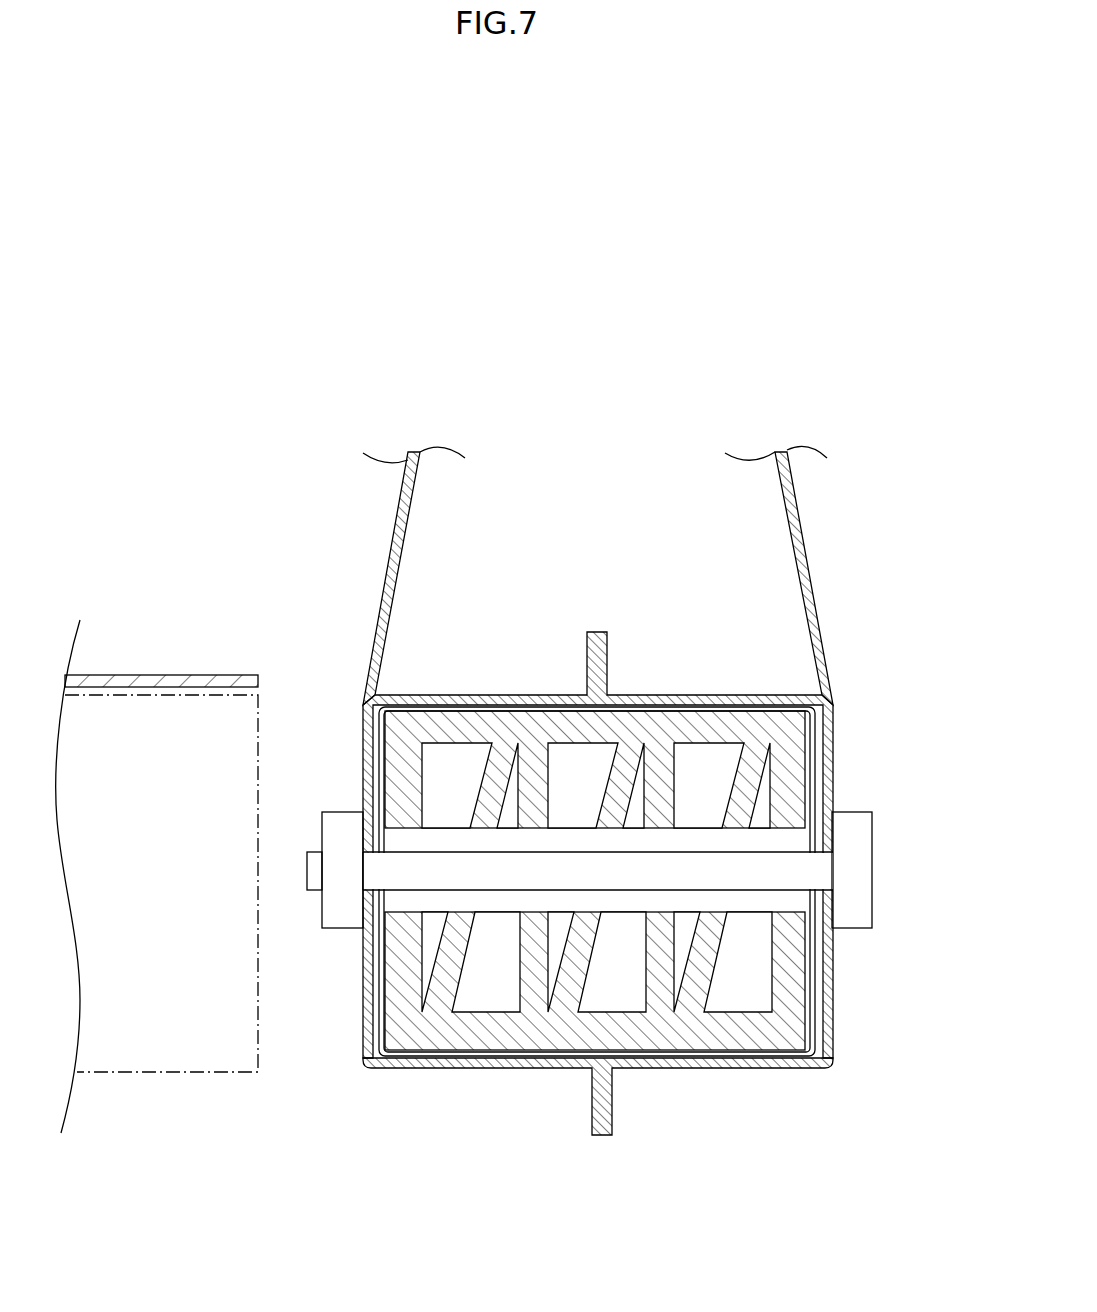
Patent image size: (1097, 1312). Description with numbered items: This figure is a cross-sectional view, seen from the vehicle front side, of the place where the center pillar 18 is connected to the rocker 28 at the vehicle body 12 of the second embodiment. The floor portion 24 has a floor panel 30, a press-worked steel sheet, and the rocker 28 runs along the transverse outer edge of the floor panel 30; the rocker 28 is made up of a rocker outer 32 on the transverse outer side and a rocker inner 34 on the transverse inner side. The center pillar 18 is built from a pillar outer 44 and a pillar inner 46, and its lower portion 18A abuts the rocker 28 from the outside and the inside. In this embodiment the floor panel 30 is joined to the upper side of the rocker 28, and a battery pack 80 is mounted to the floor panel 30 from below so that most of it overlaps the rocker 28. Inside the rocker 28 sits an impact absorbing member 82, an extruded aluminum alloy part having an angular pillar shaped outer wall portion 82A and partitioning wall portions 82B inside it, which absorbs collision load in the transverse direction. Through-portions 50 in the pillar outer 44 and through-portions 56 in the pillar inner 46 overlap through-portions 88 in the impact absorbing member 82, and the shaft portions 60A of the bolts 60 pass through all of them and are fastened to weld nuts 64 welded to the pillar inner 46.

The motor unit 12 is at (631, 727).
The lower portion 18A is at (635, 833).
The center pillar 18 is at (600, 833).
The floor portion 24 is at (157, 815).
The rocker 28 is at (598, 1139).
The floor panel 30 is at (178, 675).
The rocker outer 32 is at (752, 1060).
The rocker inner 34 is at (468, 1067).
The pillar outer 44 is at (800, 522).
The pillar inner 46 is at (386, 568).
The through-portions 50 is at (832, 862).
The through-portions 56 is at (364, 873).
The bolts 60 is at (626, 871).
The shaft portions 60A is at (647, 871).
The weld nuts 64 is at (336, 818).
The battery pack 80 is at (196, 1072).
The impact absorbing member 82 is at (639, 824).
The outer wall portion 82A is at (680, 718).
The partitioning wall portions 82B is at (712, 965).
The through-portions 88 is at (516, 829).